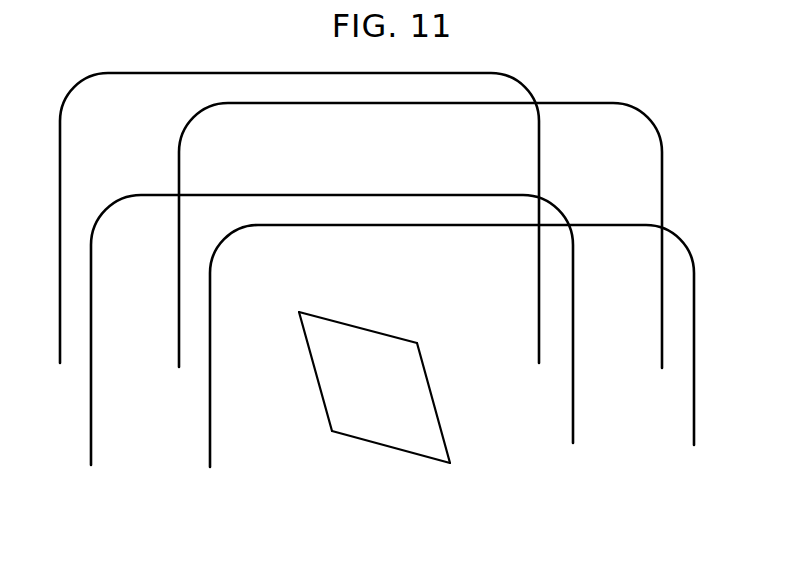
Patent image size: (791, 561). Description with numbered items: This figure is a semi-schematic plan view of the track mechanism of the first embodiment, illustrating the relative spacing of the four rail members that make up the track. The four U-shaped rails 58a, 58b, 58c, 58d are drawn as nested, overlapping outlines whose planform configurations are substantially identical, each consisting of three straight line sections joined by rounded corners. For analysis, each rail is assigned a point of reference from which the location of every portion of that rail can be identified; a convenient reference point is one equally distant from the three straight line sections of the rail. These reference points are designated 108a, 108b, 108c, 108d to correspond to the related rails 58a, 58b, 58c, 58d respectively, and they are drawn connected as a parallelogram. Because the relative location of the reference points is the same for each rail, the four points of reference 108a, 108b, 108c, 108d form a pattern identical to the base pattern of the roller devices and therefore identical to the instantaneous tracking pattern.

The rail 58a is at (62, 124).
The rail 58b is at (181, 152).
The rail 58c is at (212, 413).
The rail 58d is at (93, 413).
The point of reference 108a is at (299, 312).
The point of reference 108b is at (417, 343).
The point of reference 108c is at (450, 463).
The point of reference 108d is at (332, 431).